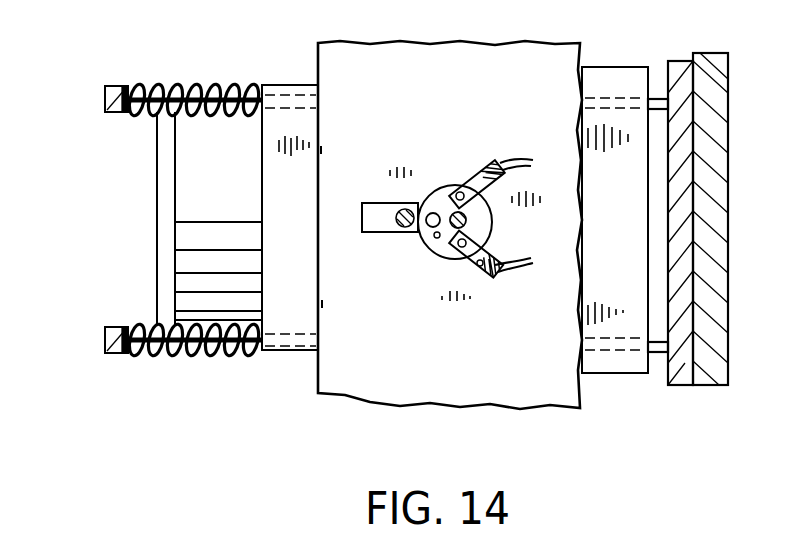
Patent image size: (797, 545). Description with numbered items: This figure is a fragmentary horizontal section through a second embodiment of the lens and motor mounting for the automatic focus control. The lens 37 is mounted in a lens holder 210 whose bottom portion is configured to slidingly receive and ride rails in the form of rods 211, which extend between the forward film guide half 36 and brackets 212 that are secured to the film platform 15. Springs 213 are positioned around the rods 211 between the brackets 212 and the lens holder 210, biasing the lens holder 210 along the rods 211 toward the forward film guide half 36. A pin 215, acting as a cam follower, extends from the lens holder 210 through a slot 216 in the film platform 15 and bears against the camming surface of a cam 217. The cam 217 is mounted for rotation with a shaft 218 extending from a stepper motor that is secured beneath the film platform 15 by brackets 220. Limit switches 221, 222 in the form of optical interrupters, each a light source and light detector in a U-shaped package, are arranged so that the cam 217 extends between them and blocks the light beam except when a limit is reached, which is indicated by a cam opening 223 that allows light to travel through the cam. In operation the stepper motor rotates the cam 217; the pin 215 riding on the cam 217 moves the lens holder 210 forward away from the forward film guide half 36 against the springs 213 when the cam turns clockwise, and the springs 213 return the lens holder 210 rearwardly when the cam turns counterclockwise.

The film platform 15 is at (510, 397).
The forward film guide half 36 is at (674, 61).
The lens 37 is at (712, 54).
The lens holder 210 is at (280, 85).
The rods 211 is at (174, 86).
The brackets 212 is at (120, 86).
The springs 213 is at (225, 86).
The pin 215 is at (397, 232).
The slot 216 is at (375, 205).
The cam 217 is at (444, 184).
The shaft 218 is at (492, 215).
The brackets 220 is at (498, 254).
The limit switch 221 is at (480, 266).
The limit switch 222 is at (470, 190).
The cam opening 223 is at (437, 237).